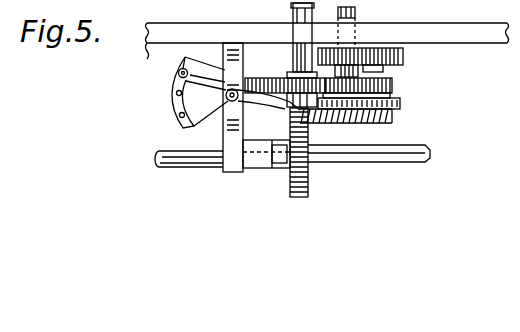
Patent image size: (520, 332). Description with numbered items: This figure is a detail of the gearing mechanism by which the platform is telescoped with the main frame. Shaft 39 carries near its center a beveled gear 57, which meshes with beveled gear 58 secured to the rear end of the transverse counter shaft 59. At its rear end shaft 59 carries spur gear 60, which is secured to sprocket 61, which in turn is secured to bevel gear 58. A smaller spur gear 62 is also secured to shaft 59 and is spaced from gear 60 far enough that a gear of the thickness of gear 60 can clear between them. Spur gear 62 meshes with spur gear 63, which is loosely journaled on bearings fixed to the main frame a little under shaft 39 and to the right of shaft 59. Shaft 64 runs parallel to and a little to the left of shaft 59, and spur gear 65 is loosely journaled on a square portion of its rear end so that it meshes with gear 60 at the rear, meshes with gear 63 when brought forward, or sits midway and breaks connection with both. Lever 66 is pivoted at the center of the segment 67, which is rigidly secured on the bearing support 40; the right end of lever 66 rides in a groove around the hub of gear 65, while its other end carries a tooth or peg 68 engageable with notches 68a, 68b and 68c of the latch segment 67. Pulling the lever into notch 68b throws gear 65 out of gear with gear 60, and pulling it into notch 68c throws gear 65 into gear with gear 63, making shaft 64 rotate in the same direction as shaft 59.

The shaft 39 is at (155, 163).
The bearing support 40 is at (237, 152).
The beveled gear 57 is at (290, 182).
The beveled gear 58 is at (350, 123).
The transverse counter shaft 59 is at (356, 8).
The spur gear 60 is at (394, 84).
The sprocket 61 is at (400, 101).
The spur gear 62 is at (293, 55).
The spur gear 63 is at (404, 52).
The shaft 64 is at (292, 4).
The spur gear 65 is at (268, 92).
The lever 66 is at (200, 79).
The latch segment 67 is at (177, 125).
The tooth or peg 68 is at (179, 73).
The notch or cut-out 68a is at (150, 67).
The notch or cut-out 68b is at (176, 94).
The notch or cut-out 68c is at (179, 116).